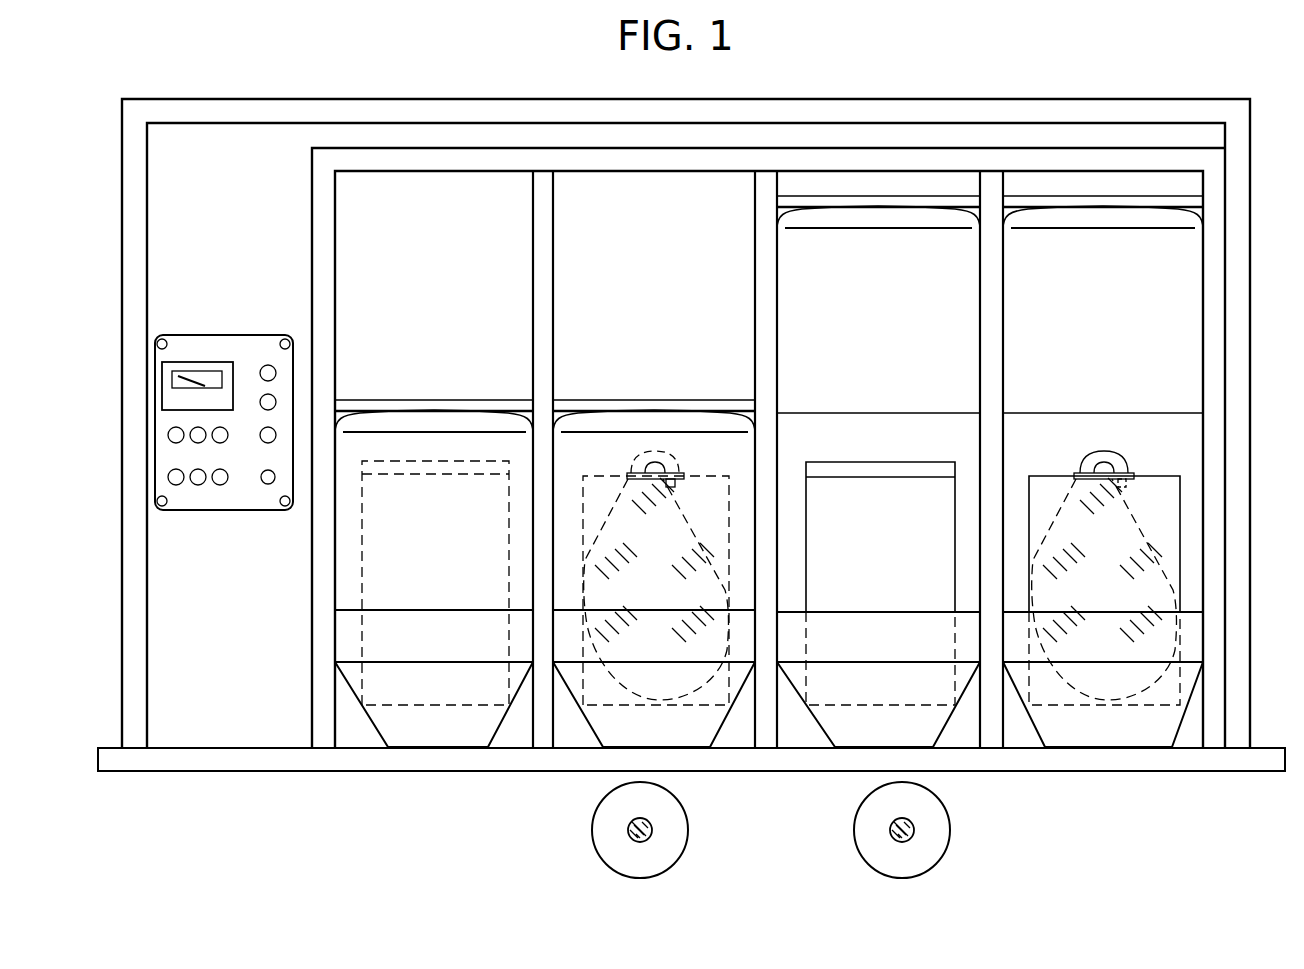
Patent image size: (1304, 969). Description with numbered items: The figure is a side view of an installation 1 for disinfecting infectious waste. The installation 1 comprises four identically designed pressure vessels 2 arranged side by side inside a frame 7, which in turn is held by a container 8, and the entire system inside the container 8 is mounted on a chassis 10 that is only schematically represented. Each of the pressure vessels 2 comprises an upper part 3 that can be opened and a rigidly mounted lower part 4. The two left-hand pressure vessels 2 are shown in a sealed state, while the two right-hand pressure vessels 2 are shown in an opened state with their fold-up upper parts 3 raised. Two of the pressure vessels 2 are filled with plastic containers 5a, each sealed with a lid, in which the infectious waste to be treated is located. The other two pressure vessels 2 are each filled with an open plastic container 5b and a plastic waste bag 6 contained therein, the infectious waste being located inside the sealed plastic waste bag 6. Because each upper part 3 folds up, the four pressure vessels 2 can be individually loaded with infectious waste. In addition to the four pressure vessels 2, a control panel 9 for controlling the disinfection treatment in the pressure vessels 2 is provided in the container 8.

The installation 1 is at (452, 90).
The pressure vessels 2 is at (398, 722).
The upper part 3 is at (428, 447).
The lower part 4 is at (348, 633).
The plastic containers 5a is at (455, 690).
The open plastic container 5b is at (718, 690).
The plastic waste bag 6 is at (612, 690).
The frame 7 is at (1213, 256).
The container 8 is at (130, 244).
The control panel 9 is at (210, 490).
The chassis 10 is at (612, 843).